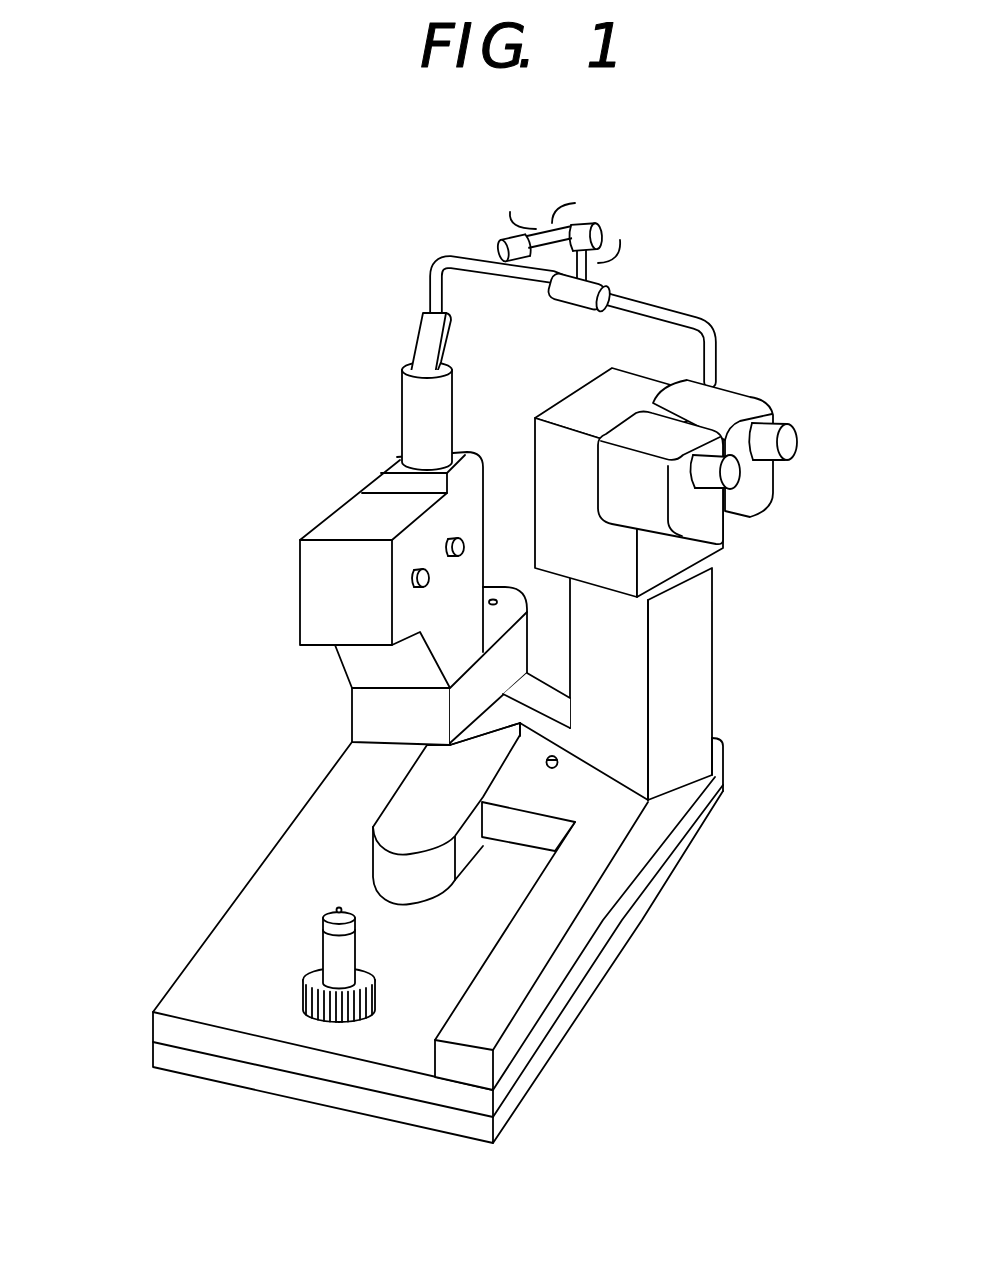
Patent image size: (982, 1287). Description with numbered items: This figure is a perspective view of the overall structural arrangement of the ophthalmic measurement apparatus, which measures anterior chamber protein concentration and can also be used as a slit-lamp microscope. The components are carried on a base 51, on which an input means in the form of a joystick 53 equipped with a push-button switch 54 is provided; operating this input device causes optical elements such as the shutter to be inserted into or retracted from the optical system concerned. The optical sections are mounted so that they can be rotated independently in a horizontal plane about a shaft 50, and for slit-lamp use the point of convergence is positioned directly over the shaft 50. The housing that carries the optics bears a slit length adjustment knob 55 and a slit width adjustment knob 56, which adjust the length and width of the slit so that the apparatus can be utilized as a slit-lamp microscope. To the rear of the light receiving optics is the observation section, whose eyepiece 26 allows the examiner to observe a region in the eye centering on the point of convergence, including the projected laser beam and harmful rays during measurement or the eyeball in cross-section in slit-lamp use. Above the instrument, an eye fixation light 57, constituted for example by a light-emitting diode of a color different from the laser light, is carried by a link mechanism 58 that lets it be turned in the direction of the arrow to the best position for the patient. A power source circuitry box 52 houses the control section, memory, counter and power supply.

The eyepiece 26 is at (796, 430).
The shaft 50 is at (493, 600).
The base 51 is at (343, 1100).
The power source circuitry box 52 is at (579, 927).
The joystick 53 is at (332, 952).
The push-button switch 54 is at (338, 908).
The slit length adjustment knob 55 is at (411, 575).
The slit width adjustment knob 56 is at (447, 545).
The eye fixation light 57 is at (497, 248).
The link mechanism 58 is at (603, 226).